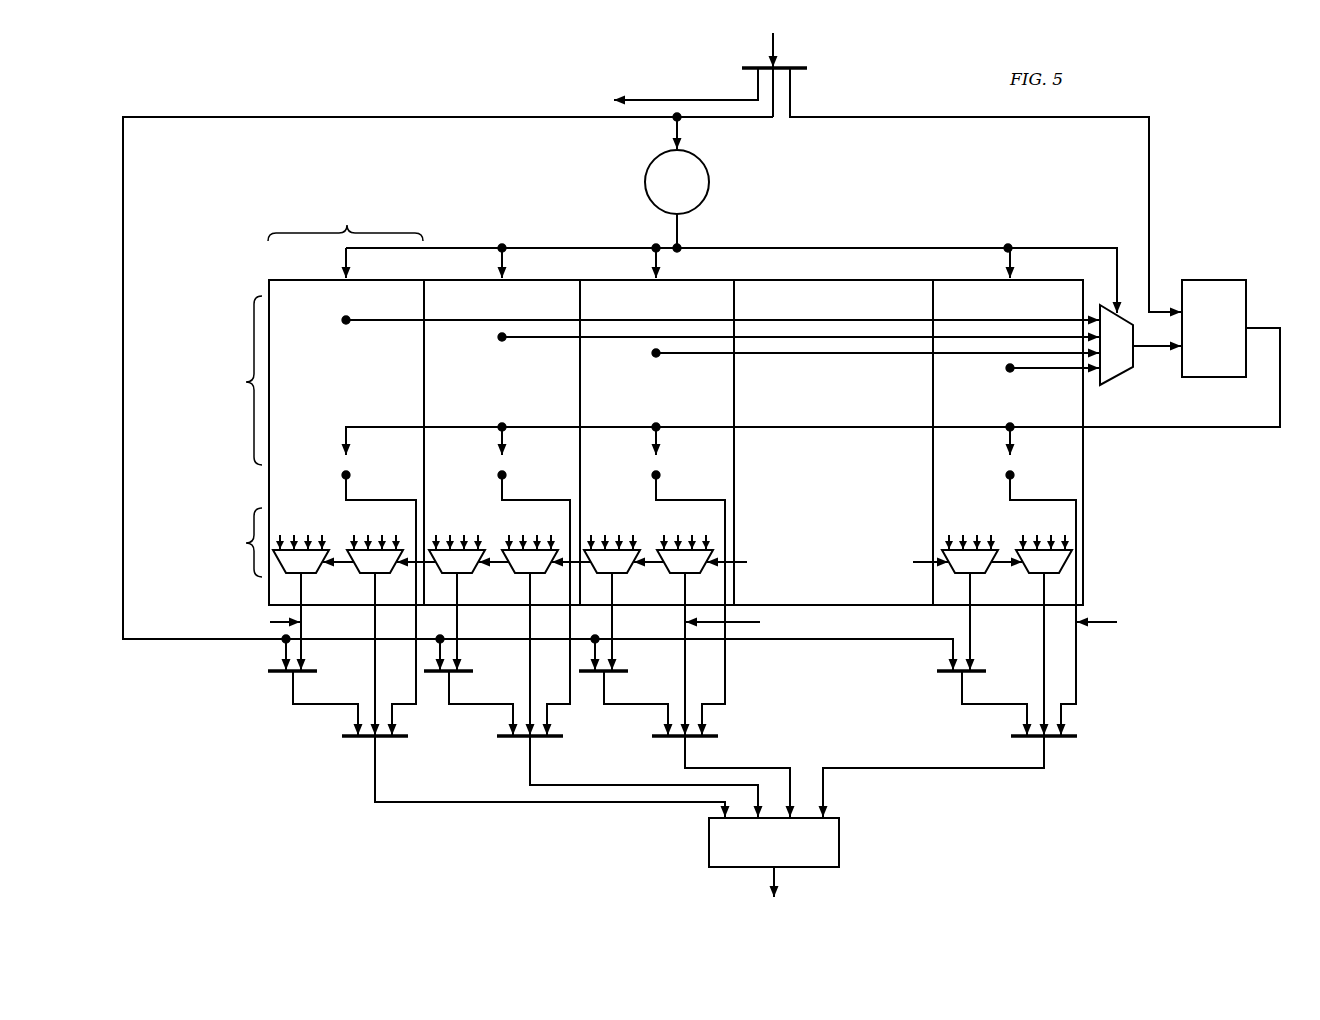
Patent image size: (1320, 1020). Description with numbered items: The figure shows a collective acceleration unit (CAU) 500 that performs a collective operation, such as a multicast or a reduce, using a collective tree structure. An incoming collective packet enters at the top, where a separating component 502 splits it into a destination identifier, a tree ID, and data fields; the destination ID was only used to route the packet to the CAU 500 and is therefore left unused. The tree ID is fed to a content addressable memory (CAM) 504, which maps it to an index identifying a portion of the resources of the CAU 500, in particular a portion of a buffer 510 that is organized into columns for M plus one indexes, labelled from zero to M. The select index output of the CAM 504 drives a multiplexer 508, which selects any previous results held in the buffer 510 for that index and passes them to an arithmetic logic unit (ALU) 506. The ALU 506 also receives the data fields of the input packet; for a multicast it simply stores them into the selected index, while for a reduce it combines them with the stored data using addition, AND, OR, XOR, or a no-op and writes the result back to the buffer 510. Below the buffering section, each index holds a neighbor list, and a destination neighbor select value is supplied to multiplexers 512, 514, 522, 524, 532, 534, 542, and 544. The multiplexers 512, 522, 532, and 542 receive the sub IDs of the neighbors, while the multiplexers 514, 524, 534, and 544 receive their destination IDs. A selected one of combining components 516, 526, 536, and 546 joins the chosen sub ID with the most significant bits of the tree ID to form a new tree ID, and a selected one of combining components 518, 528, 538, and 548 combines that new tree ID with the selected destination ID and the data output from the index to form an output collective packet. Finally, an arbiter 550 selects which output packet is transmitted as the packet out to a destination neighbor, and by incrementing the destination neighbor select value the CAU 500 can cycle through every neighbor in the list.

The collective acceleration unit 500 is at (330, 87).
The separating component 502 is at (748, 64).
The content addressable memory 504 is at (709, 182).
The arithmetic logic unit 506 is at (1214, 280).
The multiplexer 508 is at (1110, 378).
The buffer 510 is at (1083, 475).
The multiplexer 512 is at (308, 577).
The multiplexer 514 is at (348, 545).
The combining component 516 is at (316, 675).
The combining component 518 is at (398, 740).
The multiplexer 522 is at (464, 577).
The multiplexer 524 is at (504, 545).
The combining component 526 is at (472, 675).
The combining component 528 is at (553, 740).
The multiplexer 532 is at (619, 577).
The multiplexer 534 is at (659, 545).
The combining component 536 is at (627, 675).
The combining component 538 is at (708, 740).
The multiplexer 542 is at (977, 577).
The multiplexer 544 is at (1017, 545).
The combining component 546 is at (985, 675).
The combining component 548 is at (1066, 740).
The arbiter 550 is at (839, 842).